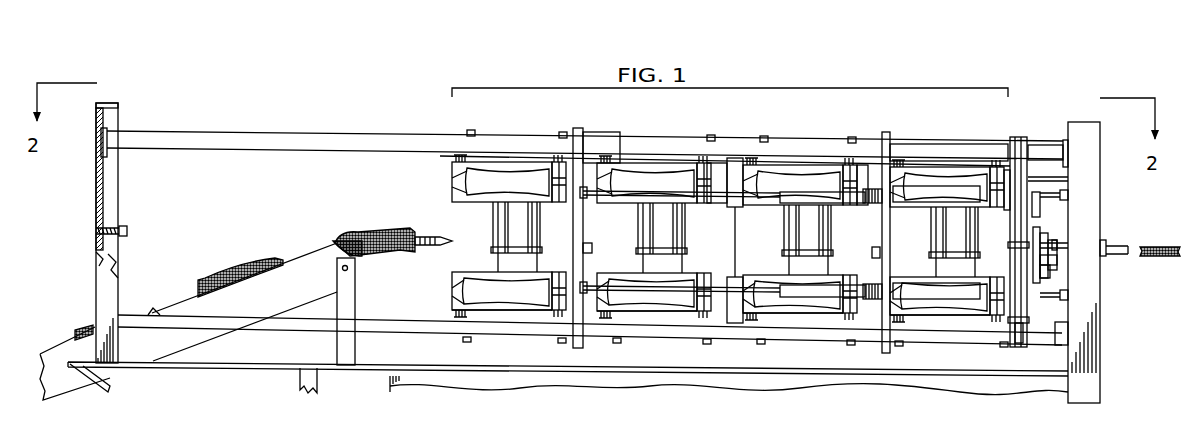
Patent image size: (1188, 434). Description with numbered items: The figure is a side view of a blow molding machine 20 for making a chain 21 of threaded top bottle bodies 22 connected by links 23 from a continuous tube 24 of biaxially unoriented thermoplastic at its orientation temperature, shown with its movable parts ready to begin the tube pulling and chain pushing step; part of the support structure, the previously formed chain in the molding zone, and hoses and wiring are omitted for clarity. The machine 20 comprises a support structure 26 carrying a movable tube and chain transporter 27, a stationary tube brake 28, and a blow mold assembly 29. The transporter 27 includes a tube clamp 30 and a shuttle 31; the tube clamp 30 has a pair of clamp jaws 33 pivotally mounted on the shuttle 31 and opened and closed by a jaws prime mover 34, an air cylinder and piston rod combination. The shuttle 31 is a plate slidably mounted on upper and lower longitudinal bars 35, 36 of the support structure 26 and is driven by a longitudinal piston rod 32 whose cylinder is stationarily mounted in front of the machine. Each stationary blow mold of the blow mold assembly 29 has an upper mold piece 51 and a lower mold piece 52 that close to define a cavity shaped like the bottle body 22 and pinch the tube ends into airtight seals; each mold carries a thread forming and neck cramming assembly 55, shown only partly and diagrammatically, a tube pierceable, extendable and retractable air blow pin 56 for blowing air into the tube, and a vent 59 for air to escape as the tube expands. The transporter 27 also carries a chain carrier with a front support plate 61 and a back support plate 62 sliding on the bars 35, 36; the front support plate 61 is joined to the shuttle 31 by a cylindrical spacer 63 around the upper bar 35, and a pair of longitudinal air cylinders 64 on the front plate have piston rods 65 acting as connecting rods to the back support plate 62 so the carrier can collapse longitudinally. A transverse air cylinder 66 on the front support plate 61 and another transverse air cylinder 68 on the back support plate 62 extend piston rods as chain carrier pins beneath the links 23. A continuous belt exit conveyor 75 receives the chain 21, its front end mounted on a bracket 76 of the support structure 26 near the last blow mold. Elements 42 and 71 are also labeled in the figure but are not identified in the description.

The blow molding machine 20 is at (192, 115).
The chain 21 is at (292, 245).
The bottle body 22 is at (78, 329).
The link 23 is at (442, 235).
The continuous tube 24 is at (1161, 247).
The support structure 26 is at (370, 379).
The tube and chain transporter 27 is at (1010, 127).
The stationary tube brake 28 is at (1060, 260).
The blow mold assembly 29 is at (742, 88).
The tube clamp 30 is at (1036, 211).
The shuttle 31 is at (1028, 178).
The longitudinal piston rod 32 is at (1060, 243).
The clamp jaws 33 is at (1018, 220).
The jaws prime mover 34 is at (1068, 297).
The upper longitudinal bar 35 is at (1043, 150).
The lower longitudinal bar 36 is at (255, 322).
The gear 42 is at (1050, 268).
The upper mold piece 51 is at (455, 180).
The lower mold piece 52 is at (453, 300).
The thread forming and neck cramming assembly 55 is at (573, 172).
The air blow pin 56 is at (567, 168).
The vent 59 is at (535, 305).
The front support plate 61 is at (882, 227).
The back support plate 62 is at (583, 224).
The cylindrical spacer 63 is at (947, 147).
The longitudinal air cylinders 64 is at (915, 287).
The piston rods 65 is at (735, 207).
The transversely disposed air cylinder 66 is at (872, 253).
The transverse air cylinder 68 is at (592, 248).
The adjusting bolt 71 is at (127, 225).
The continuous belt exit conveyor 75 is at (301, 296).
The bracket 76 is at (342, 355).